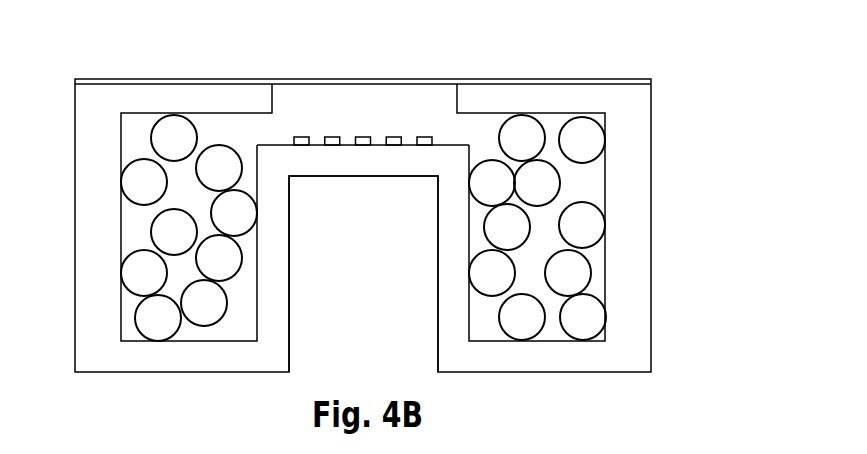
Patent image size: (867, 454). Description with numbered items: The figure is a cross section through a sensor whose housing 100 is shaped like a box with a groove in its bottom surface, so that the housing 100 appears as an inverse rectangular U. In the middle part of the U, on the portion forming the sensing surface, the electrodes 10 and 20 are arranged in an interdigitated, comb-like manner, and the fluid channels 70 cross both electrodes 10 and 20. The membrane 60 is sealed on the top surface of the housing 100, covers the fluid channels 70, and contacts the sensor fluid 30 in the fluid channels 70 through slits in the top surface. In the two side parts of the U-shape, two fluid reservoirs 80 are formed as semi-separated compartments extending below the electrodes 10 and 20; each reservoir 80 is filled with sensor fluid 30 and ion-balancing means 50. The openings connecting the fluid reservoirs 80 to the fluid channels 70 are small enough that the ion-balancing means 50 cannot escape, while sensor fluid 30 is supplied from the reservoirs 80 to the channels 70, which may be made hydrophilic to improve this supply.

The electrode 10 is at (302, 145).
The electrode 20 is at (330, 135).
The sensor fluid 30 is at (242, 135).
The ion-balancing means 50 is at (592, 143).
The membrane 60 is at (546, 79).
The fluid channel 70 is at (424, 113).
The fluid reservoir 80 is at (592, 177).
The housing 100 is at (654, 252).